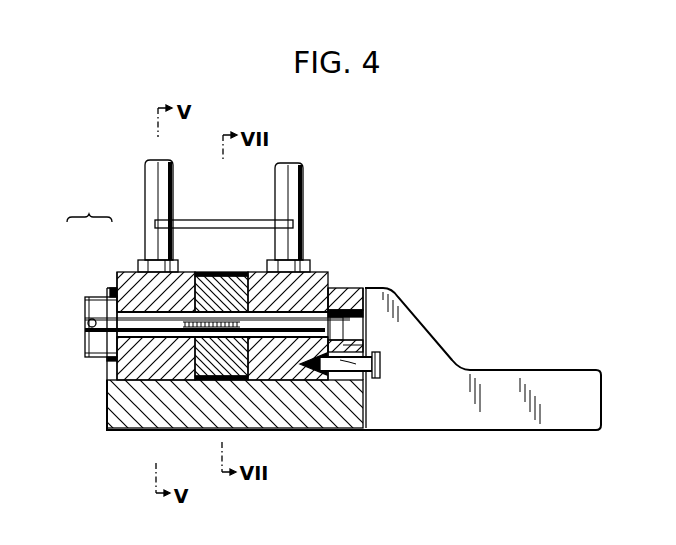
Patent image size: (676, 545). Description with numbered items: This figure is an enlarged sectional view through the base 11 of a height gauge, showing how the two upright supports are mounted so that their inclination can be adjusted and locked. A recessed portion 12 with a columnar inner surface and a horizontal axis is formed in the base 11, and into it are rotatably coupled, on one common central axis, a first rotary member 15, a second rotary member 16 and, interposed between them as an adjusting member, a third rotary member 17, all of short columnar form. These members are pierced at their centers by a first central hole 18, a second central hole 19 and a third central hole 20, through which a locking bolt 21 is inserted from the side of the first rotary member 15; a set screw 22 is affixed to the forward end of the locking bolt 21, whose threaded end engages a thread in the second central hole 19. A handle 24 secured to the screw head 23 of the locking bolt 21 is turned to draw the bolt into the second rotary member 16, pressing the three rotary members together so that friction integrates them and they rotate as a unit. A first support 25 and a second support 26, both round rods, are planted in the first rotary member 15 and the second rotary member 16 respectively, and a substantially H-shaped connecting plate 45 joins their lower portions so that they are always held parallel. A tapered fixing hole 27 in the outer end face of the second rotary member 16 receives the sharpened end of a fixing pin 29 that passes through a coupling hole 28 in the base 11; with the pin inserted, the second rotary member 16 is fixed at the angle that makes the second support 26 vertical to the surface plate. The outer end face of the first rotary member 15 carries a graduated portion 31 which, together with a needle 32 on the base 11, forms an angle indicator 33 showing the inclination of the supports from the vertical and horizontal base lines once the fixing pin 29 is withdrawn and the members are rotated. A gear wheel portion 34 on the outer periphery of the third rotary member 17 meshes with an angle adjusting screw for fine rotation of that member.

The base 11 is at (407, 332).
The recessed portion 12 is at (295, 387).
The first rotary member 15 is at (132, 272).
The second rotary member 16 is at (318, 273).
The third rotary member 17 is at (218, 272).
The first central hole 18 is at (185, 273).
The second central hole 19 is at (352, 303).
The third central hole 20 is at (245, 272).
The locking bolt 21 is at (103, 360).
The set screw 22 is at (357, 288).
The screw head 23 is at (83, 294).
The handle 24 is at (88, 325).
The first support 25 is at (147, 185).
The second support 26 is at (303, 182).
The fixing hole 27 is at (368, 393).
The coupling hole 28 is at (376, 366).
The fixing pin 29 is at (380, 370).
The graduated portion 31 is at (113, 287).
The needle 32 is at (110, 287).
The angle indicator 33 is at (89, 207).
The gear wheel portion 34 is at (203, 378).
The connecting plate 45 is at (200, 220).